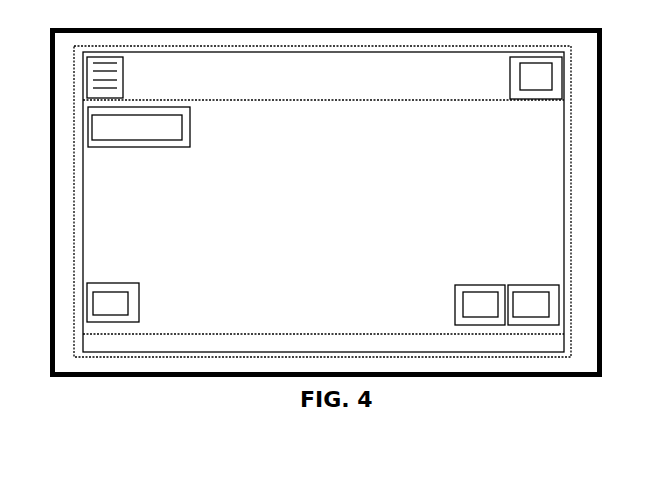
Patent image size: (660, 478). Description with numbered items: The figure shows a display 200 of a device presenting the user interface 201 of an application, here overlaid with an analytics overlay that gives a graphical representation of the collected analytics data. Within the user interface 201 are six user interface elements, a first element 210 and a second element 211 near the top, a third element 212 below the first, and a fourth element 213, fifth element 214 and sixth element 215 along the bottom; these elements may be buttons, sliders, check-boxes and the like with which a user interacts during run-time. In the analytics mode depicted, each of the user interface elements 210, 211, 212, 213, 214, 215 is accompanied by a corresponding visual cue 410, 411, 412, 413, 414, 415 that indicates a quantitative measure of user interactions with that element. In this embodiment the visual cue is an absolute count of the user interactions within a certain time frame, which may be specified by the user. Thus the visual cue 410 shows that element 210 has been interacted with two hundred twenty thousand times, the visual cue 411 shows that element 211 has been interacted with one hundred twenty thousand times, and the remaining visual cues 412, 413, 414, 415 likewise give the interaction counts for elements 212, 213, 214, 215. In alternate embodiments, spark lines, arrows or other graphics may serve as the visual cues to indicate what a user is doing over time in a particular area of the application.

The display 200 is at (492, 27).
The user interface 201 is at (72, 154).
The user interface element 210 is at (115, 68).
The user interface element 211 is at (522, 67).
The user interface element 212 is at (175, 128).
The user interface element 213 is at (107, 293).
The user interface element 214 is at (468, 298).
The user interface element 215 is at (542, 310).
The visual cue 410 is at (165, 88).
The visual cue 411 is at (491, 100).
The visual cue 412 is at (175, 165).
The visual cue 413 is at (172, 290).
The visual cue 414 is at (480, 268).
The visual cue 415 is at (530, 265).